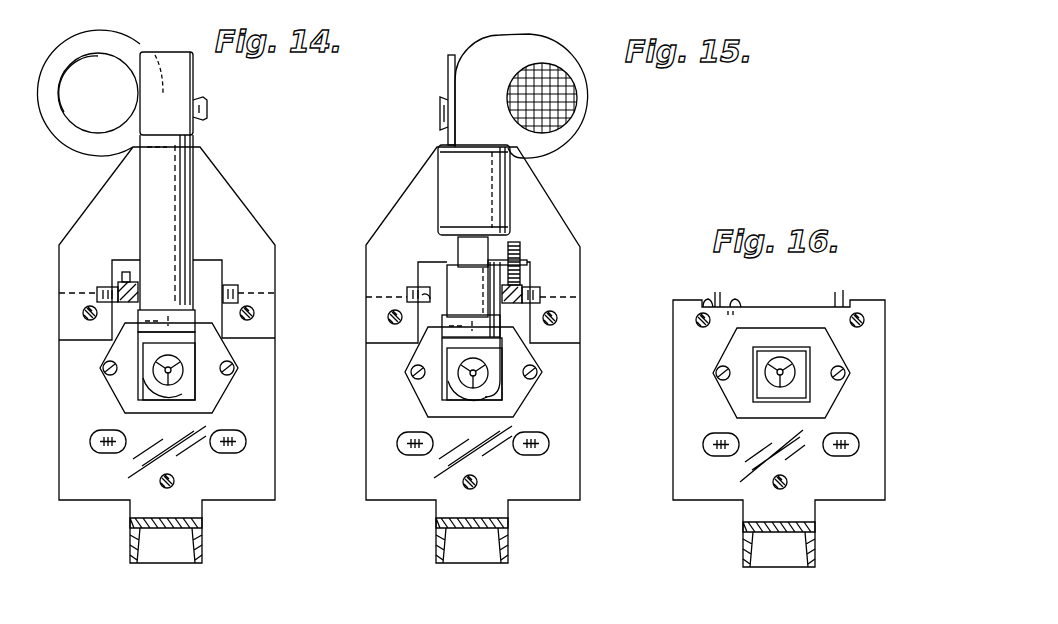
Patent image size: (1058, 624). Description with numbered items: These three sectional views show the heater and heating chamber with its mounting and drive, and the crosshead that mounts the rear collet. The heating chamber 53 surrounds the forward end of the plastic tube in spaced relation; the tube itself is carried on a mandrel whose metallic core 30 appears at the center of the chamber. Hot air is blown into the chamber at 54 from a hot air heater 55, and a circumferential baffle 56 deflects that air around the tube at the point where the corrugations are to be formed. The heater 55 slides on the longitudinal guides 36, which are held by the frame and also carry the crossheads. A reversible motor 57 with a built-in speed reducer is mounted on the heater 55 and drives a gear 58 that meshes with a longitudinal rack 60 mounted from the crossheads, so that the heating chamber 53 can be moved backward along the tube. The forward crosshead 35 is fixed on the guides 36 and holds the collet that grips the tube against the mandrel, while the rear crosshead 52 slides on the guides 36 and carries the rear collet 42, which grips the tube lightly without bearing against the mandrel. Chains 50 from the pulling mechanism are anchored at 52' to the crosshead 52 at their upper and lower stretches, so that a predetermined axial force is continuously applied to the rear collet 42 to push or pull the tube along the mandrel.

In FIG. 14, the metallic core 30 is at (166, 371).
In FIG. 15, the metallic core 30 is at (471, 374).
In FIG. 16, the metallic core 30 is at (778, 372).
In FIG. 14, the crosshead 35 is at (275, 430).
In FIG. 14, the longitudinal guides 36 is at (82, 313).
In FIG. 15, the longitudinal guides 36 is at (560, 318).
In FIG. 16, the longitudinal guides 36 is at (860, 318).
In FIG. 15, the collet 42 is at (512, 350).
In FIG. 16, the collet 42 is at (776, 376).
In FIG. 14, the chains 50 is at (232, 294).
In FIG. 15, the chains 50 is at (411, 453).
In FIG. 16, the chains 50 is at (722, 300).
In FIG. 15, the crosshead 52 is at (497, 355).
In FIG. 16, the crosshead 52 is at (801, 433).
In FIG. 15, the anchor 52' is at (473, 371).
In FIG. 16, the anchor 52' is at (802, 403).
In FIG. 14, the heating chamber 53 is at (190, 350).
In FIG. 15, the heating chamber 53 is at (445, 348).
In FIG. 14, the hot air inlet 54 is at (145, 215).
In FIG. 15, the hot air inlet 54 is at (460, 280).
In FIG. 14, the hot air heater 55 is at (118, 40).
In FIG. 15, the hot air heater 55 is at (545, 50).
In FIG. 14, the circumferential baffle 56 is at (125, 393).
In FIG. 15, the circumferential baffle 56 is at (505, 395).
In FIG. 15, the reversible motor 57 is at (472, 200).
In FIG. 15, the gear 58 is at (518, 256).
In FIG. 14, the longitudinal rack 60 is at (118, 284).
In FIG. 15, the longitudinal rack 60 is at (520, 290).